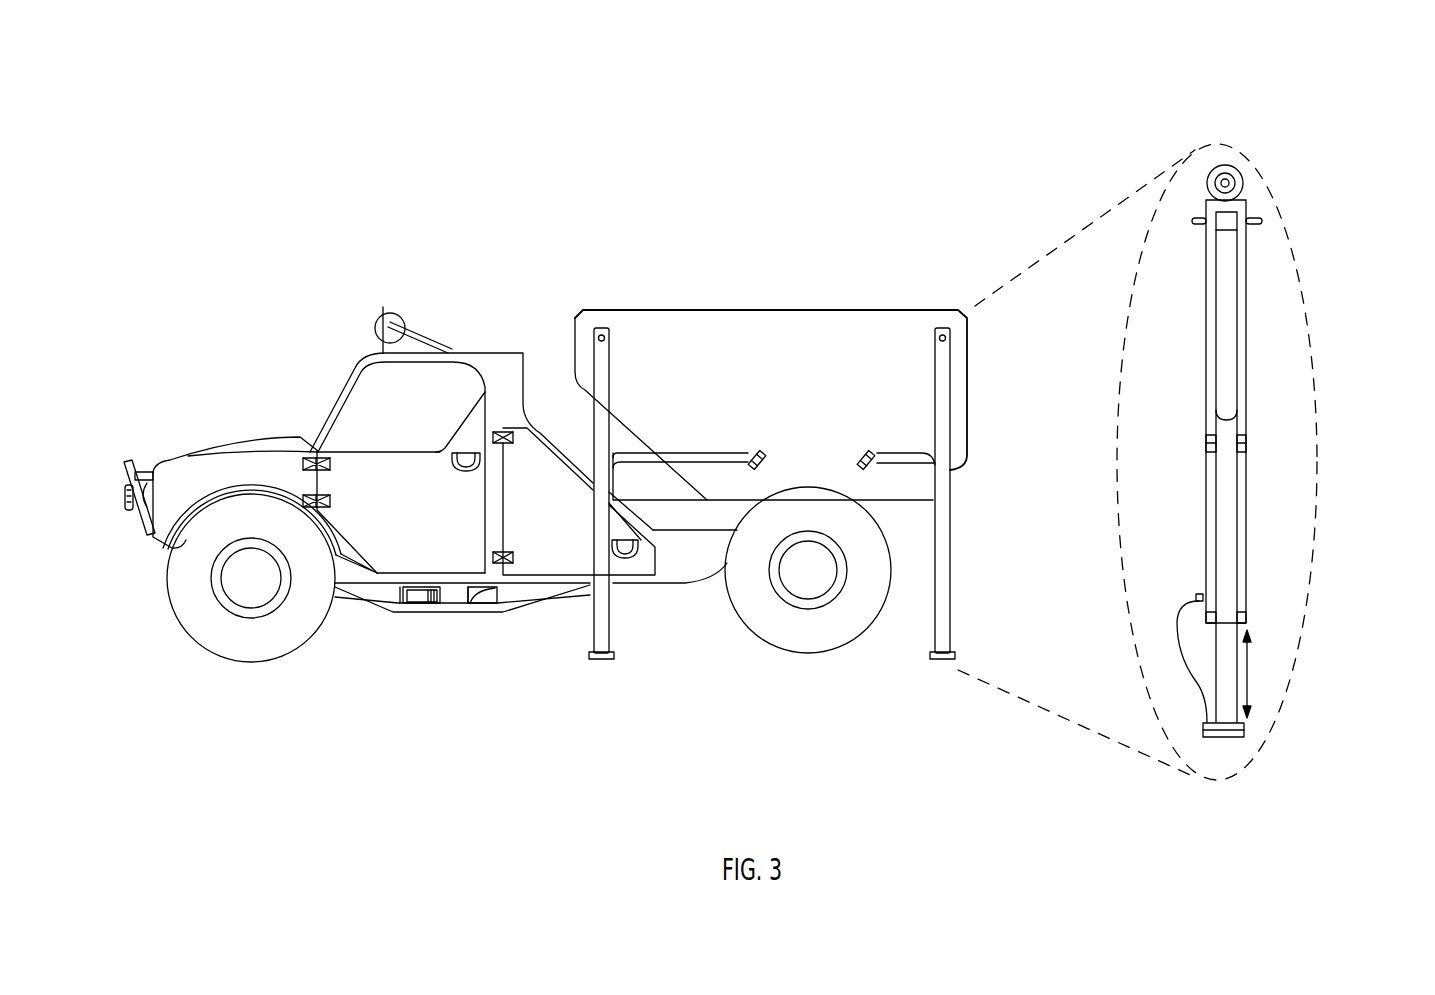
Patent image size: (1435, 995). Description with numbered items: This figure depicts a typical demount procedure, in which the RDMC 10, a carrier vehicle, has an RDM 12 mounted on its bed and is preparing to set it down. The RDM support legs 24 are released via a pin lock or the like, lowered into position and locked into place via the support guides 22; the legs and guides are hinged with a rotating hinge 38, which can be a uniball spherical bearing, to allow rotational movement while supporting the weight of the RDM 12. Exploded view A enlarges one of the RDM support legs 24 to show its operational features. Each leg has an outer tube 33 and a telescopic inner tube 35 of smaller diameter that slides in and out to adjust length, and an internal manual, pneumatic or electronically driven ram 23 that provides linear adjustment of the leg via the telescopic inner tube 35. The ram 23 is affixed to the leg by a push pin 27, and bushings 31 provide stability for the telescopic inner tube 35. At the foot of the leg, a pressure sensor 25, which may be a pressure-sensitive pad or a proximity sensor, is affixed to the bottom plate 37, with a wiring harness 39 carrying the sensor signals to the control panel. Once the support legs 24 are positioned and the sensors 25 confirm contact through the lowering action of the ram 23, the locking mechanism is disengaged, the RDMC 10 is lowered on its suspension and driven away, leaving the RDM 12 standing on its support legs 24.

The RDMC 10 is at (784, 200).
The RDM 12 is at (819, 309).
The support guides 22 is at (878, 444).
The RDM support legs 24 is at (611, 618).
The pressure sensor 25 is at (613, 657).
The rotating hinge 38 is at (606, 328).
The ram 23 is at (1227, 373).
The push pin 27 is at (1198, 222).
The bushings 31 is at (1247, 613).
The outer tube 33 is at (1248, 322).
The telescopic inner tube 35 is at (1210, 462).
The bottom plate 37 is at (1246, 727).
The wiring harness 39 is at (1176, 617).
The exploded view A is at (1301, 268).